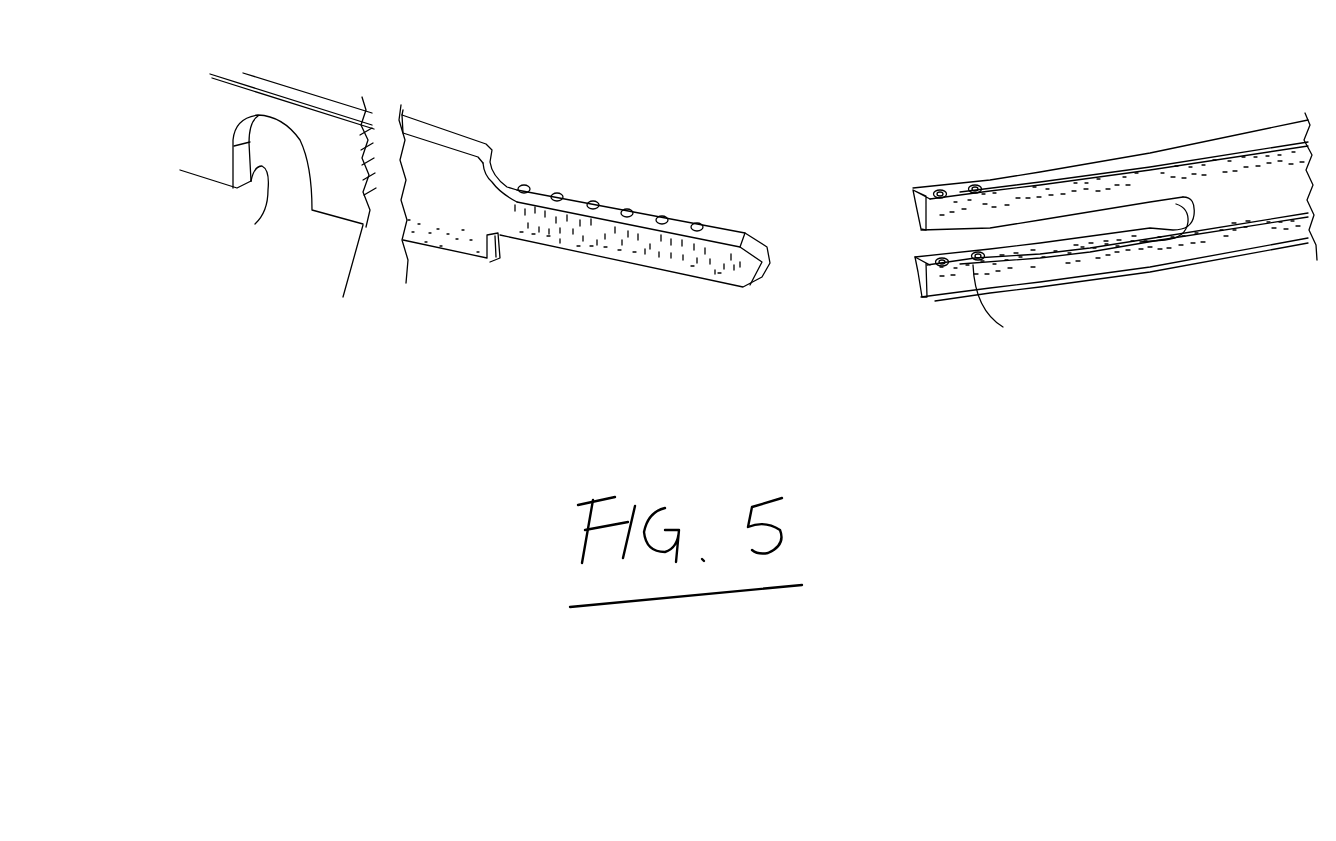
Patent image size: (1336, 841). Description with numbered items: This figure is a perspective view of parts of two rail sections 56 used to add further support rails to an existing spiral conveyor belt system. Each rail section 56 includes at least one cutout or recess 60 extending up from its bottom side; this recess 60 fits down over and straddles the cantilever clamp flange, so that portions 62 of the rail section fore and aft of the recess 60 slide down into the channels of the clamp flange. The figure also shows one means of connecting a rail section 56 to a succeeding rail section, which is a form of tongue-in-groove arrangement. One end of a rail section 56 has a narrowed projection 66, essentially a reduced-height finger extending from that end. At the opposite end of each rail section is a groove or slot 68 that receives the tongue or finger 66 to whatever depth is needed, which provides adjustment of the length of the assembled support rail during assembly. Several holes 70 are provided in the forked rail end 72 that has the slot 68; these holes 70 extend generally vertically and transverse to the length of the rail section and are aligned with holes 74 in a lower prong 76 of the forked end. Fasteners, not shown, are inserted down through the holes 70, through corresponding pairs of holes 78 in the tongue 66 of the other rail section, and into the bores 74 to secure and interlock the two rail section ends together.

The rail section 56 is at (1237, 137).
The cutout or recess 60 is at (250, 232).
The portions of the rail section 62 is at (332, 302).
The narrowed projection (tongue or finger) 66 is at (647, 260).
The groove or slot 68 is at (946, 246).
The holes 70 is at (1026, 118).
The forked rail end 72 is at (1076, 372).
The holes (bores) in lower prong 74 is at (1008, 255).
The lower prong 76 is at (1083, 270).
The holes in the tongue 78 is at (527, 187).